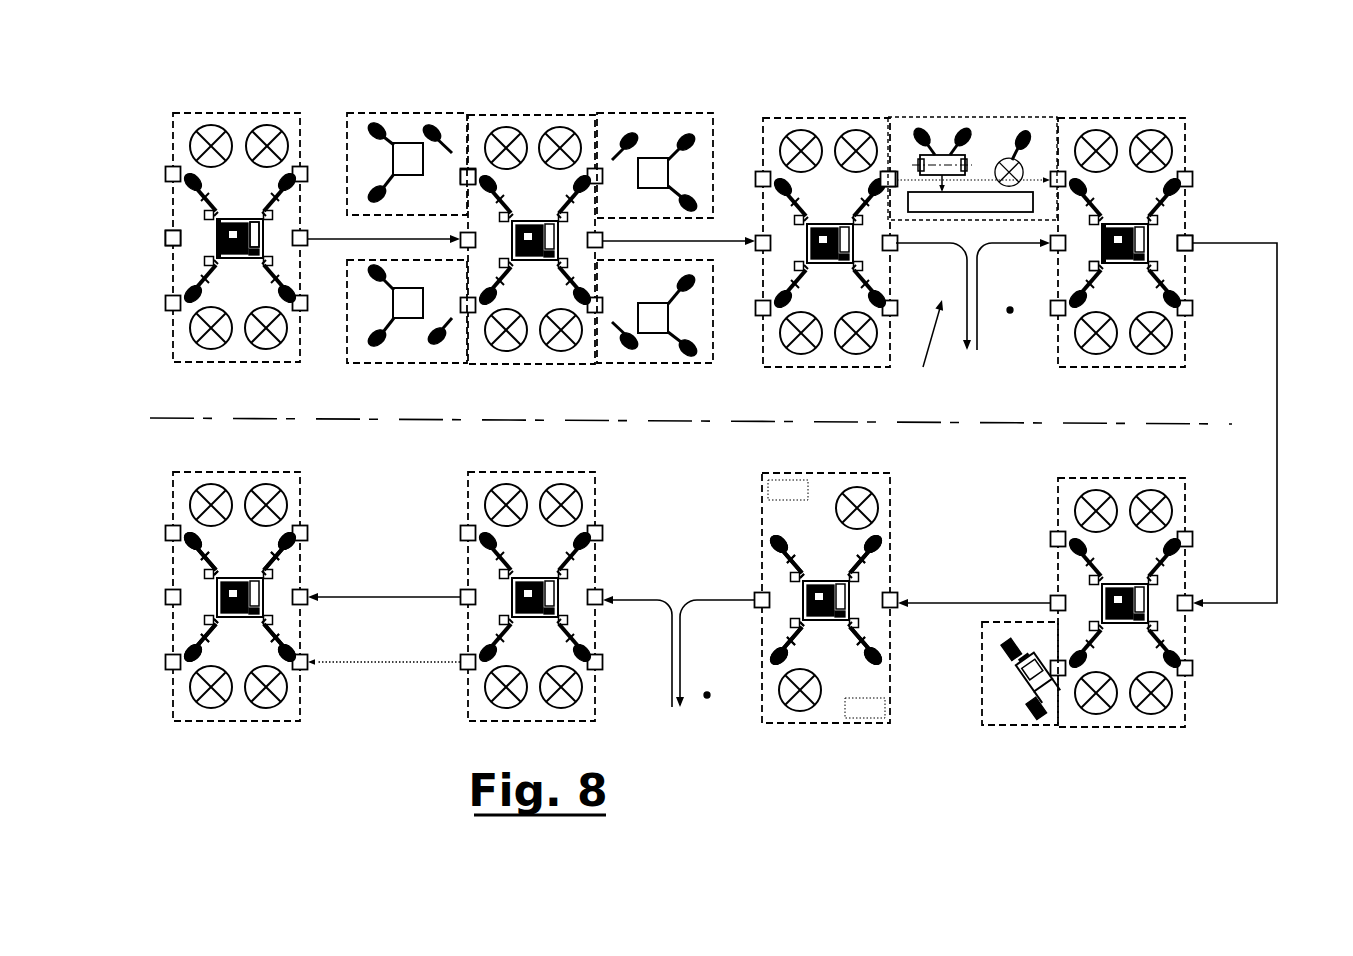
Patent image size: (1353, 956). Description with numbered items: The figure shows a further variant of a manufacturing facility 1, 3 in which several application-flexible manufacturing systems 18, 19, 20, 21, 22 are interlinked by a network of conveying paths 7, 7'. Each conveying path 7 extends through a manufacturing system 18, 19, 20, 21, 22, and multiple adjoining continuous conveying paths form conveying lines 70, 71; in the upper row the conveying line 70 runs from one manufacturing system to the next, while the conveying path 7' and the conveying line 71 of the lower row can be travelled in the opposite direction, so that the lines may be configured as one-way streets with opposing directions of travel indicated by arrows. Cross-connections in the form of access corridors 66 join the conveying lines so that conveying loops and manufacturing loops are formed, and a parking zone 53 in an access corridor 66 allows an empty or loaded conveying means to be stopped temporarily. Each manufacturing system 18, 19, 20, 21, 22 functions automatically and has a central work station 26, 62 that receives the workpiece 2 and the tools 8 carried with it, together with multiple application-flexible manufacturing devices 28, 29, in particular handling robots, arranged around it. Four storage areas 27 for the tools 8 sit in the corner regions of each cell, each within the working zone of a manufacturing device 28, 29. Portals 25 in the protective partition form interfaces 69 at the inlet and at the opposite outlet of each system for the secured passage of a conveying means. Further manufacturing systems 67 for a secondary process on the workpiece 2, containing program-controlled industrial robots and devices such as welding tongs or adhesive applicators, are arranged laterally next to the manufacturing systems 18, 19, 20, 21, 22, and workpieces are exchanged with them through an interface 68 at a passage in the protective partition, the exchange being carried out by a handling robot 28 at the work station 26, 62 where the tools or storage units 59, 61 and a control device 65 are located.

The production plant 1 is at (742, 403).
The manufacturing facility 3 is at (1215, 141).
The workpiece 2 is at (683, 313).
The conveying path 7 is at (792, 385).
The conveying line 70 is at (721, 240).
The conveying path 7' is at (940, 449).
The conveying line 71 is at (972, 425).
The tool 8 is at (453, 116).
The storage area 27 is at (268, 137).
The manufacturing system 18 is at (688, 235).
The manufacturing system 19 is at (533, 125).
The manufacturing system 20 is at (825, 122).
The manufacturing system 21 is at (1125, 125).
The manufacturing system 22 is at (1124, 712).
The portal 25 is at (688, 221).
The interface 69 is at (168, 233).
The work station 26 is at (683, 259).
The interface 62 is at (217, 243).
The manufacturing device 28 is at (492, 426).
The manufacturing device 29 is at (198, 190).
The parking zone 53 is at (930, 350).
The magazine 59 is at (1043, 279).
The storage unit 61 is at (1090, 268).
The control unit 65 is at (266, 242).
The access corridor 66 is at (1010, 310).
The further manufacturing system 67 is at (388, 113).
The interface 68 is at (465, 170).